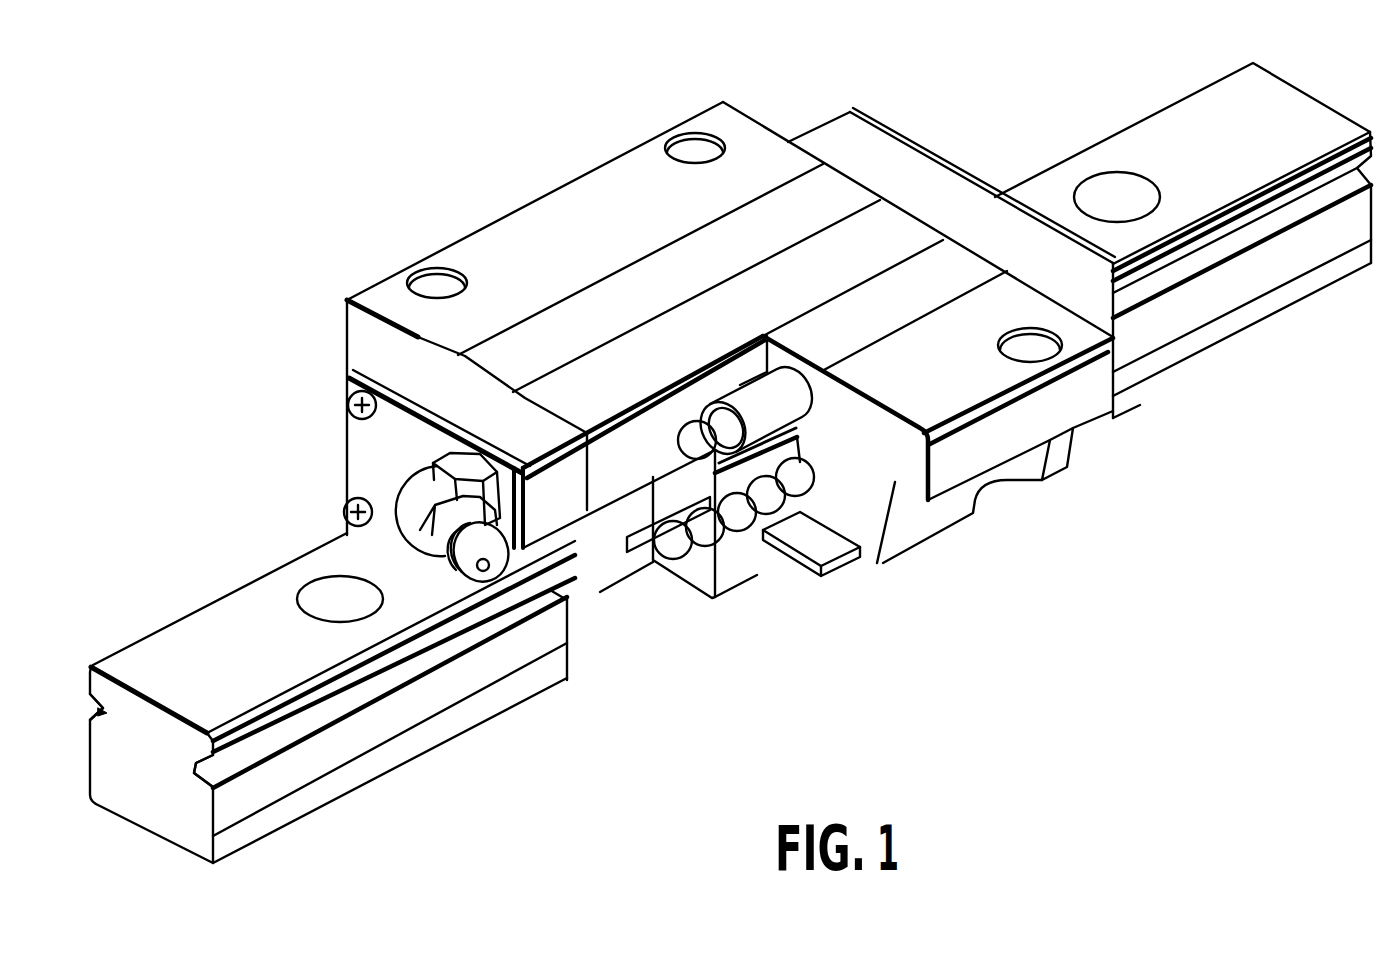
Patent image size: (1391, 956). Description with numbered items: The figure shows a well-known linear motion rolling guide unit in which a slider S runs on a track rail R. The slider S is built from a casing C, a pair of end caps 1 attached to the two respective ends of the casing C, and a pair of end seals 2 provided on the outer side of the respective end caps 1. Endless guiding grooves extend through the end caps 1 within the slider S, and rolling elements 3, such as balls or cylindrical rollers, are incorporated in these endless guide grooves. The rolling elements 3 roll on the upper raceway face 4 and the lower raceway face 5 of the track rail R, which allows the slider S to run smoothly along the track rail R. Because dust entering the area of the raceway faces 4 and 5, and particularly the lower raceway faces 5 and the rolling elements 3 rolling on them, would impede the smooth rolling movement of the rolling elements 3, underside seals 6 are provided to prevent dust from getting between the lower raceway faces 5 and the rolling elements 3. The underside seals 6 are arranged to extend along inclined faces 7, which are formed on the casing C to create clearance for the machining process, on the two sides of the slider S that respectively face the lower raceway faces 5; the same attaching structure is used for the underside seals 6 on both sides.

The track rail R is at (1280, 103).
The casing C is at (578, 180).
The slider S is at (797, 112).
The end cap 1 is at (402, 372).
The end seal 2 is at (373, 460).
The rolling element 3 is at (667, 542).
The upper raceway face 4 is at (100, 702).
The lower raceway face 5 is at (98, 713).
The underside seal 6 is at (805, 542).
The inclined face 7 is at (800, 533).